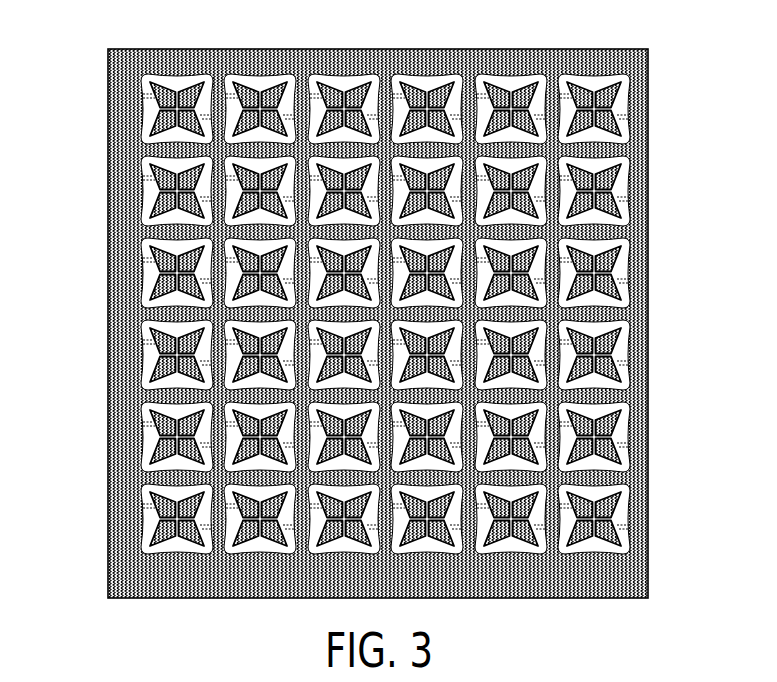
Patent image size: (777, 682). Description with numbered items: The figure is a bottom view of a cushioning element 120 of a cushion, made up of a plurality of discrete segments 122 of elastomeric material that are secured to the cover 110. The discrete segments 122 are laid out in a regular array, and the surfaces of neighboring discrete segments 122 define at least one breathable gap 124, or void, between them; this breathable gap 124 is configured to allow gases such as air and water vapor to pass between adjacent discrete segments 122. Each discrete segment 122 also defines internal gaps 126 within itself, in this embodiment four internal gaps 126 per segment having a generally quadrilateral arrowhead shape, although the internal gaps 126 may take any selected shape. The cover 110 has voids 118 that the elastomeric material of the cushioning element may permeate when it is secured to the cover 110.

The cover 110 is at (649, 471).
The voids of the cover 118 is at (600, 49).
The cushioning element 120 is at (98, 75).
The discrete segments 122 is at (630, 272).
The breathable gap 124 is at (649, 301).
The internal gaps 126 is at (649, 238).